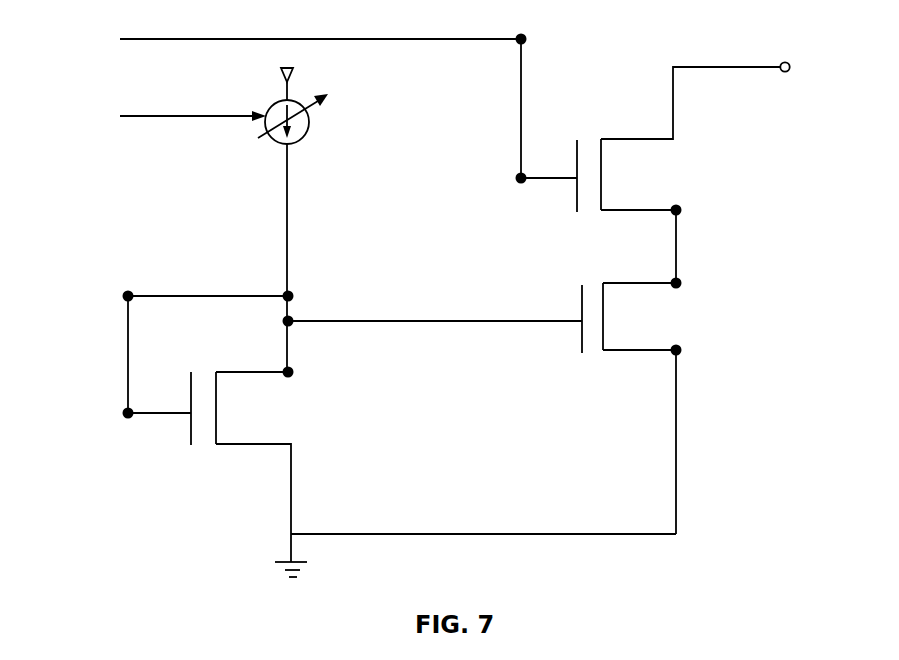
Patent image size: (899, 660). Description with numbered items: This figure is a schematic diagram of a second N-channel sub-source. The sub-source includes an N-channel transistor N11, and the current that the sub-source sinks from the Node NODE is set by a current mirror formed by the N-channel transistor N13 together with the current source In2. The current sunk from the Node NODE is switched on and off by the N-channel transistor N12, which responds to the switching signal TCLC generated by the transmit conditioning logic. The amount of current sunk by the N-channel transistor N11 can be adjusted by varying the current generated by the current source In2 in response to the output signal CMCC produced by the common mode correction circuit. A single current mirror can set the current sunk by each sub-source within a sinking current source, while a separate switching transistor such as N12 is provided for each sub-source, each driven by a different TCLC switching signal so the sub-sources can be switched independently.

The switching signal TCLC is at (282, 106).
The output signal of the common mode correction circuit CMCC is at (151, 116).
The current source In2 is at (306, 223).
The N-channel transistor N12 is at (650, 175).
The N-channel transistor N11 is at (513, 406).
The N-channel transistor N13 is at (237, 427).
The Node NODE is at (821, 68).